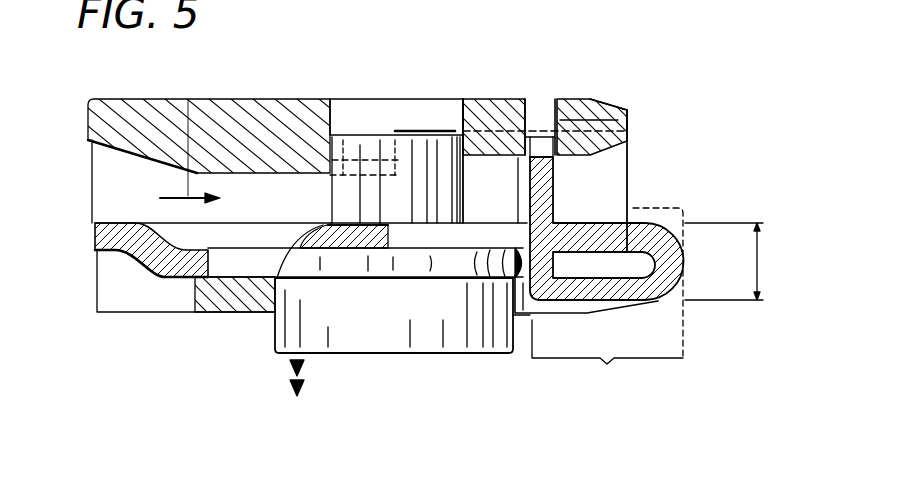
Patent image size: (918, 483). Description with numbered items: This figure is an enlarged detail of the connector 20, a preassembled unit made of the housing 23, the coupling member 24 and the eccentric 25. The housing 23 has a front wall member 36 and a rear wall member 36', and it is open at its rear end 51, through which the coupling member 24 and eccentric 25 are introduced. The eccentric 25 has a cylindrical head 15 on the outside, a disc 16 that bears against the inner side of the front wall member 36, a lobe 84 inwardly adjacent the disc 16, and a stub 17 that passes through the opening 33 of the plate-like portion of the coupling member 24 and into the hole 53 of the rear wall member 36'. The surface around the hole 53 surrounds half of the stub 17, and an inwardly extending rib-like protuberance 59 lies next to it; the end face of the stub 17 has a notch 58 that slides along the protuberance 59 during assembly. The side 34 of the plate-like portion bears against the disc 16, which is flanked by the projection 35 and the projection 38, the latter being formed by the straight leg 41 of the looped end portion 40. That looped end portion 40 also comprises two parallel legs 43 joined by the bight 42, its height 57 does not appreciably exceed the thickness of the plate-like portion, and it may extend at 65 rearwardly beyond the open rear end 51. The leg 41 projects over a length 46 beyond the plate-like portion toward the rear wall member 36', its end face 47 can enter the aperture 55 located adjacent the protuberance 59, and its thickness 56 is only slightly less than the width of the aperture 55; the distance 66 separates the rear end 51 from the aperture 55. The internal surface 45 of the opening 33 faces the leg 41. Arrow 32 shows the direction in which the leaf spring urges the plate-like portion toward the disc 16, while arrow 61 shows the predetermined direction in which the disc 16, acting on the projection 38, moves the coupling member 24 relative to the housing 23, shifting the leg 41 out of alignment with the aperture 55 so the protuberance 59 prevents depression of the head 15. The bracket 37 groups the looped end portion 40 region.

The connector 20 is at (667, 88).
The housing 23 is at (158, 98).
The arrow 61 is at (189, 100).
The opening 33 is at (272, 236).
The hole 53 is at (343, 110).
The stub 17 is at (415, 143).
The notch 58 is at (428, 130).
The rear wall member 36' is at (486, 105).
The protuberance 59 is at (490, 98).
The aperture 55 is at (533, 112).
The end face 47 is at (548, 112).
The distance 66 is at (585, 105).
The open rear end 51 is at (633, 112).
The internal surface 45 is at (630, 188).
The rearward extension 65 is at (648, 205).
The thickness 56 is at (555, 187).
The length 46 is at (518, 193).
The side 34 is at (500, 247).
The coupling member 24 is at (95, 235).
The projection 35 is at (190, 278).
The front wall member 36 is at (339, 339).
The lobe 84 is at (277, 278).
The arrow 32 is at (290, 372).
The eccentric 25 is at (353, 368).
The disc 16 is at (393, 278).
The head 15 is at (410, 320).
The leg 41 is at (508, 305).
The projection 38 is at (553, 295).
The legs 43 is at (607, 243).
The looped end portion 40 is at (678, 247).
The bight 42 is at (680, 262).
The height 57 is at (770, 252).
The clip assembly 37 is at (607, 355).